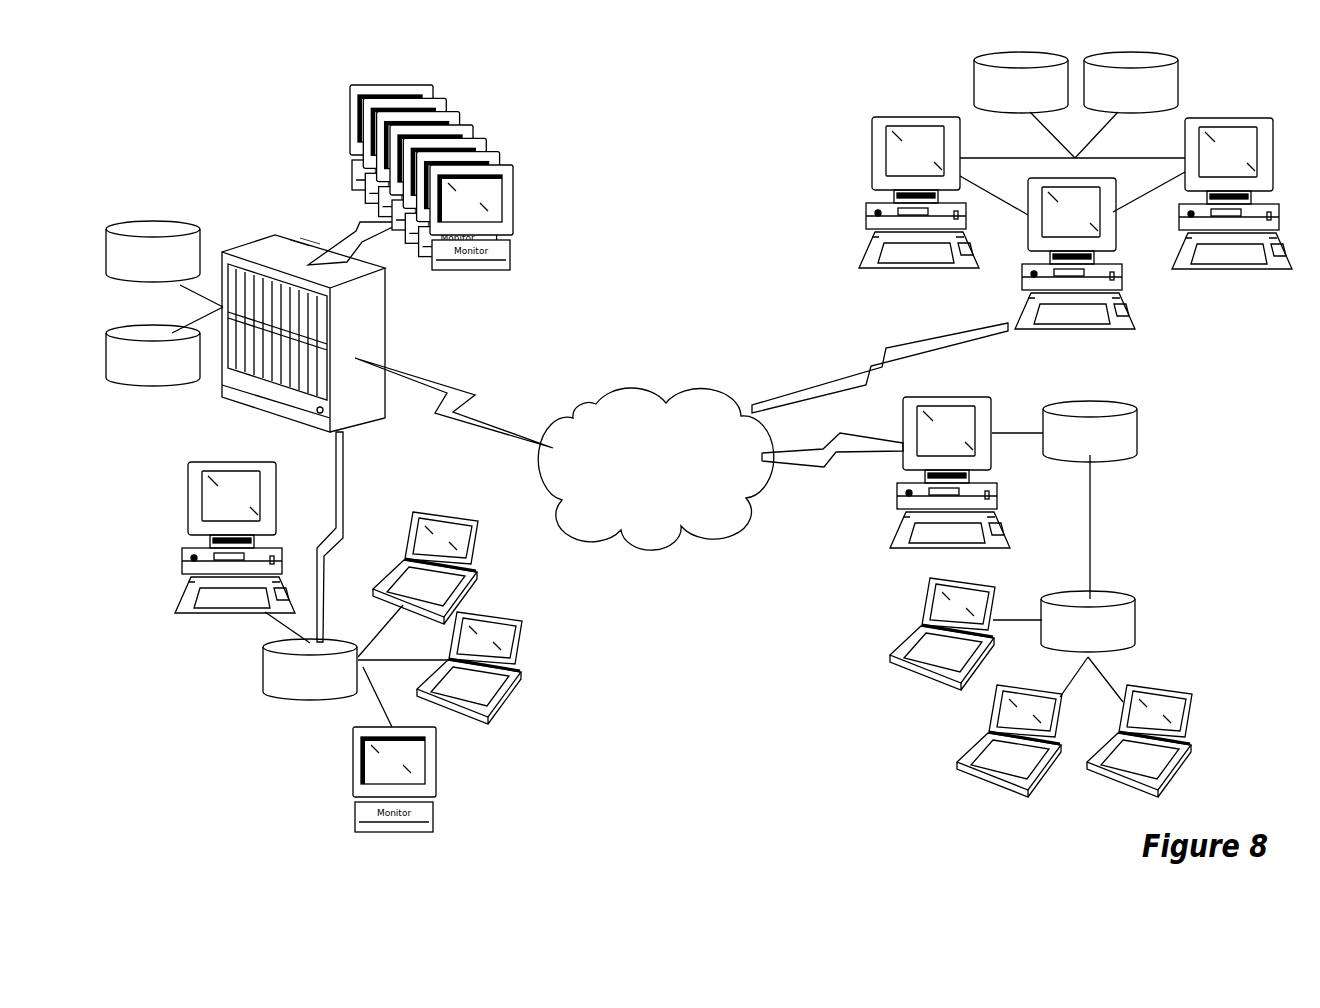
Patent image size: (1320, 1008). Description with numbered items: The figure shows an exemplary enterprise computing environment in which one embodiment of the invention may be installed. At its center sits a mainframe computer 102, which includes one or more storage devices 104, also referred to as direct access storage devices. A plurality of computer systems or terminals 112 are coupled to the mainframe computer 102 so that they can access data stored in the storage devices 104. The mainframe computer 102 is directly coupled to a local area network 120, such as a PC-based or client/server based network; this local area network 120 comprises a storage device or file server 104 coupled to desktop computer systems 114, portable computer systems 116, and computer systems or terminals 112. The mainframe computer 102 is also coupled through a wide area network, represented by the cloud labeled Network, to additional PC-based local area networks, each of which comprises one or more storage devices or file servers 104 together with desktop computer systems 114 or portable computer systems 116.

The mainframe computer 102 is at (378, 330).
The storage device 104 is at (136, 272).
The computer systems or terminals 112 is at (489, 127).
The desktop computer systems 114 is at (890, 117).
The portable computer systems 116 is at (458, 513).
The local area network 120 is at (250, 801).